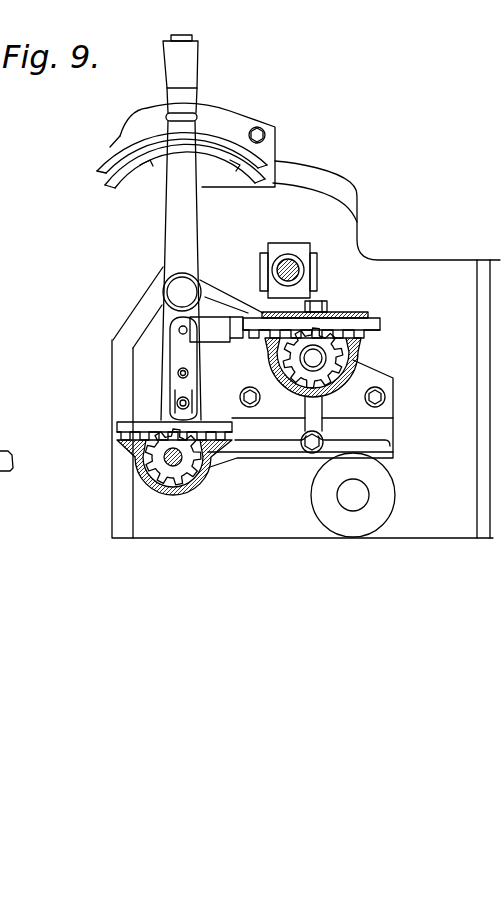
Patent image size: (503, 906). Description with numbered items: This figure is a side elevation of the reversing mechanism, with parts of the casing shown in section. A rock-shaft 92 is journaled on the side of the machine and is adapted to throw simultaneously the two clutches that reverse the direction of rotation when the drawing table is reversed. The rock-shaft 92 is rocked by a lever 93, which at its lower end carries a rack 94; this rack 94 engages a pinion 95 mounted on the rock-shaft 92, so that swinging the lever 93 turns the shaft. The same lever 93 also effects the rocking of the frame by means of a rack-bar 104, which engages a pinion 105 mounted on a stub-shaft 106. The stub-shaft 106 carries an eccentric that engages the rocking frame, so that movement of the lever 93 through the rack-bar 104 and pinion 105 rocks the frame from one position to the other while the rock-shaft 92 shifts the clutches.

The rock-shaft 92 is at (172, 480).
The lever 93 is at (173, 233).
The rack 94 is at (117, 435).
The pinion 95 is at (150, 458).
The rack-bar 104 is at (383, 320).
The pinion 105 is at (350, 362).
The stub-shaft 106 is at (310, 360).